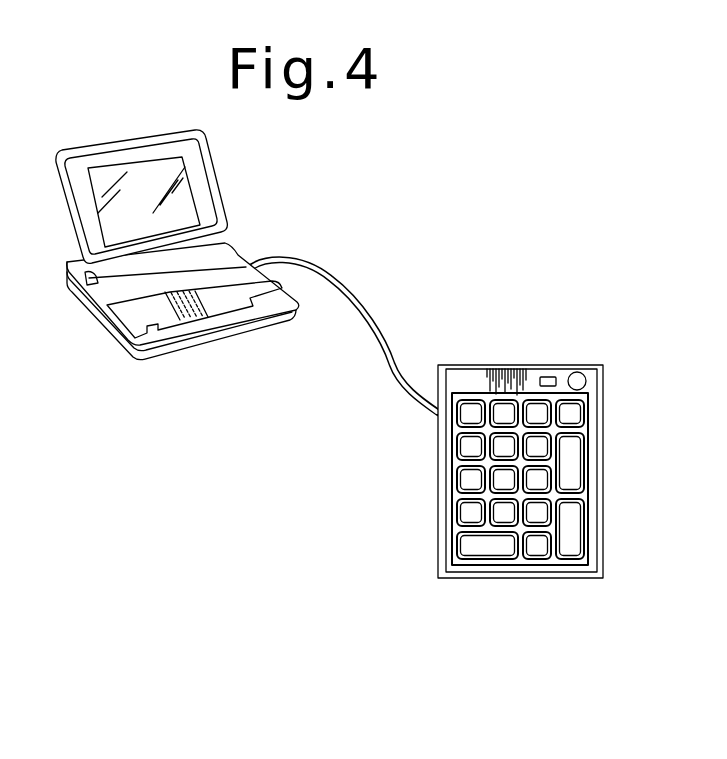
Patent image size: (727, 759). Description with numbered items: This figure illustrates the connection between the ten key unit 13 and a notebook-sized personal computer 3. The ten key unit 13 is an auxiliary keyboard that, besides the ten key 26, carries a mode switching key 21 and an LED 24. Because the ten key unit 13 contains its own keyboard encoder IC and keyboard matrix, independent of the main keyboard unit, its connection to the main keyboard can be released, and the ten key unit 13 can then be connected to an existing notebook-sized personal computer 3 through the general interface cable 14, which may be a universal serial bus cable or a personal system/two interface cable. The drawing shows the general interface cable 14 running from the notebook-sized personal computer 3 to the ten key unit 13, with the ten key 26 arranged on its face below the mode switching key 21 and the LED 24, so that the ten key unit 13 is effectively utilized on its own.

The notebook-sized personal computer 3 is at (93, 316).
The ten key unit 13 is at (503, 468).
The general interface cable 14 is at (385, 353).
The mode switching key 21 is at (581, 372).
The LED 24 is at (545, 375).
The ten key 26 is at (460, 522).